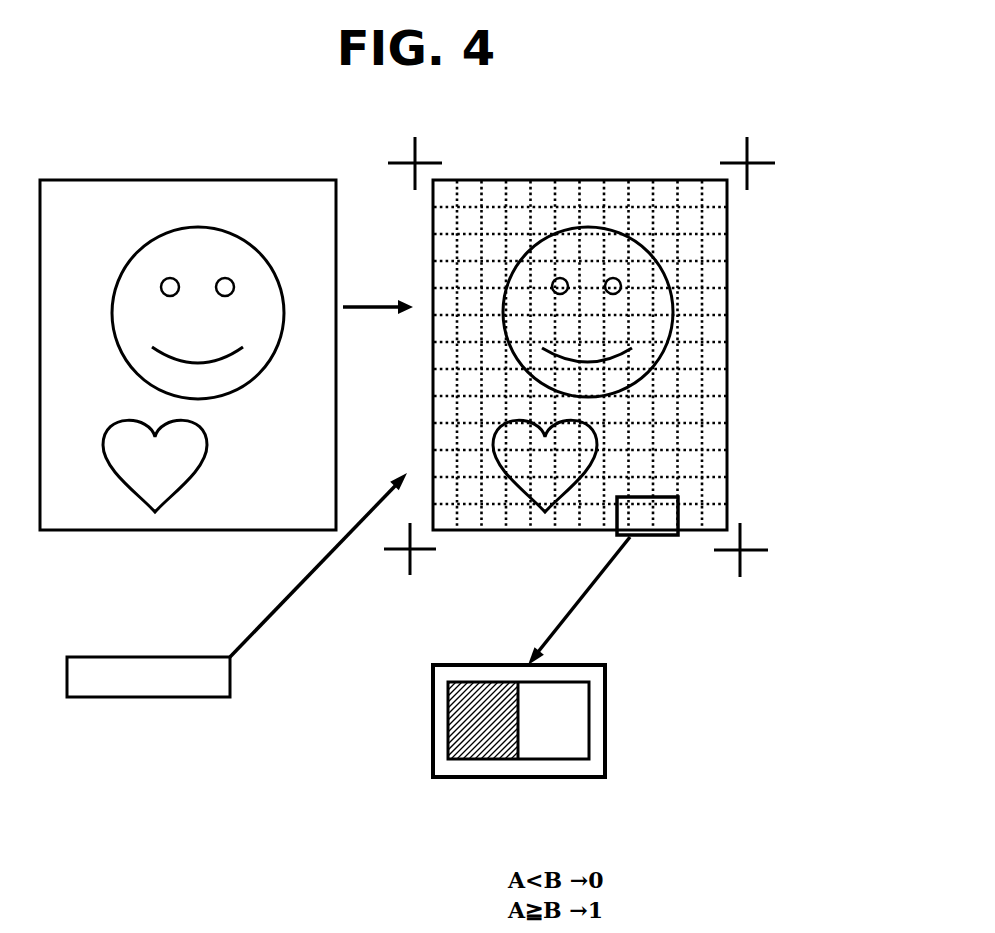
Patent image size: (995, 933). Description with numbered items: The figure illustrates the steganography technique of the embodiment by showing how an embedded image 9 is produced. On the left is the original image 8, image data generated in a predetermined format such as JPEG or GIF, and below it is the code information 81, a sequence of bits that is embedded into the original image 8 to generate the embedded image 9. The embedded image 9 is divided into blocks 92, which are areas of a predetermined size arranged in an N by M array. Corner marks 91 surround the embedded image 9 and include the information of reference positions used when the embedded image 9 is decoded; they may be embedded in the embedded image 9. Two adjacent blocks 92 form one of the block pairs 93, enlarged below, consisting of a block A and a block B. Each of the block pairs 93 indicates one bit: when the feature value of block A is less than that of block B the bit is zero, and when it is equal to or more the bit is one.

The original image 8 is at (137, 180).
The code information 81 is at (107, 657).
The embedded image 9 is at (597, 389).
The corner marks 91 is at (425, 160).
The blocks 92 is at (445, 530).
The block pairs 93 is at (583, 665).
The block A is at (473, 759).
The block B is at (567, 757).